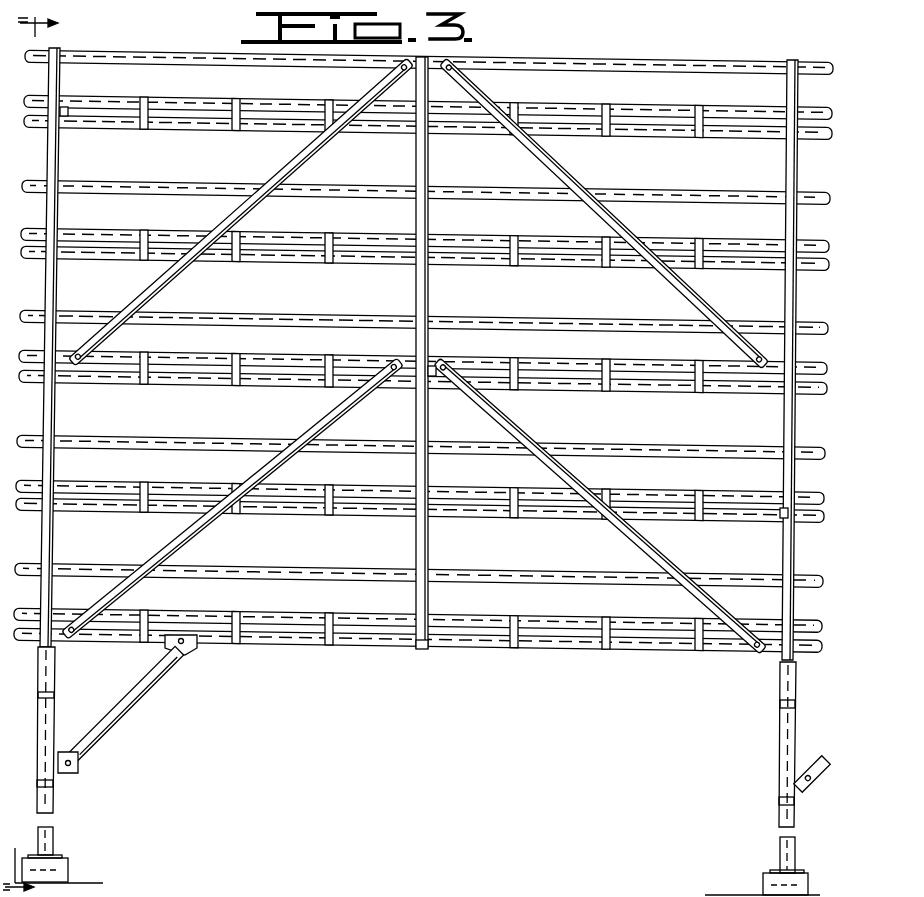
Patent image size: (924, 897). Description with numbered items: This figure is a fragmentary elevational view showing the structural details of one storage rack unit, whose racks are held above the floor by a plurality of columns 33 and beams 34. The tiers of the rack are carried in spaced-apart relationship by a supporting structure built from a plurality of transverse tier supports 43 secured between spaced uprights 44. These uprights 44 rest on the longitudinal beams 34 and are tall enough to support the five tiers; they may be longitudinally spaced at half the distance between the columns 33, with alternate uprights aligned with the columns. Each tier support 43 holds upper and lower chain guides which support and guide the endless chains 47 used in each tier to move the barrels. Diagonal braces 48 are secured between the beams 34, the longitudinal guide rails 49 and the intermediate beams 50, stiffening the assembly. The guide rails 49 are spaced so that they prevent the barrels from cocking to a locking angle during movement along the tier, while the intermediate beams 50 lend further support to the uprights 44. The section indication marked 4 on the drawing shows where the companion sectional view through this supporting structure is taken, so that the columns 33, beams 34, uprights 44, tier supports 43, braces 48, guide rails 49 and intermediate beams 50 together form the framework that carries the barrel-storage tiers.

The section line 4- 4 is at (53, 453).
The column 33 is at (53, 700).
The beam 34 is at (431, 652).
The transverse tier support 43 is at (66, 114).
The upright 44 is at (58, 293).
The endless chain 47 is at (149, 766).
The diagonal brace 48 is at (305, 160).
The longitudinal guide rail 49 is at (626, 60).
The intermediate beam 50 is at (585, 358).